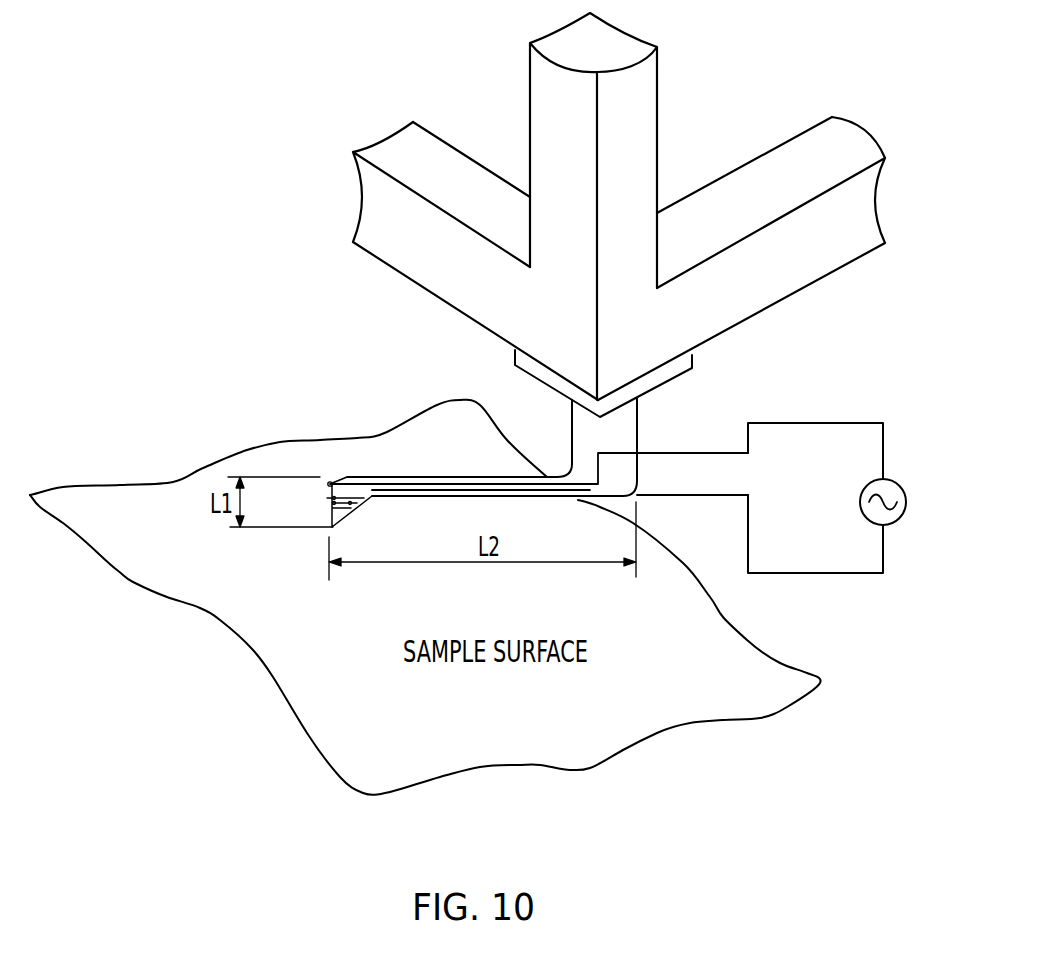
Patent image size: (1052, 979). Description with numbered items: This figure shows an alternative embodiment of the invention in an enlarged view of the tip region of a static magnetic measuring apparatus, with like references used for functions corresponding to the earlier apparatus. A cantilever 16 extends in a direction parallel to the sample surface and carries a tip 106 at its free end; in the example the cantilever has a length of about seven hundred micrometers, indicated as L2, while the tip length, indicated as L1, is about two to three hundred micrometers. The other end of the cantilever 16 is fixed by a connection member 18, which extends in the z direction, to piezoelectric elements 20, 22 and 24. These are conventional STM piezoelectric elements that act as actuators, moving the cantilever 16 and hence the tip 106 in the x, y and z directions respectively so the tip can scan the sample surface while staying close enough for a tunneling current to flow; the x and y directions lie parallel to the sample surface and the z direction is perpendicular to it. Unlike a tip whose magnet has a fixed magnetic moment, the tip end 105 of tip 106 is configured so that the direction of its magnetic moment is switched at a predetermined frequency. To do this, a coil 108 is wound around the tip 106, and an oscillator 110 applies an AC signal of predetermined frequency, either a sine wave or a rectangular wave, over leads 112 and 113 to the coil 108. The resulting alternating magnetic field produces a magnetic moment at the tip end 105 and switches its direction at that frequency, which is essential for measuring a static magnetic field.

The cantilever 16 is at (418, 470).
The connection member 18 is at (630, 437).
The piezoelectric element 20 is at (817, 272).
The piezoelectric element 22 is at (397, 153).
The piezoelectric element 24 is at (650, 138).
The tip end 105 is at (246, 575).
The tip 106 is at (332, 527).
The coil 108 is at (327, 498).
The oscillator 110 is at (858, 500).
The lead 112 is at (813, 423).
The lead 113 is at (808, 575).